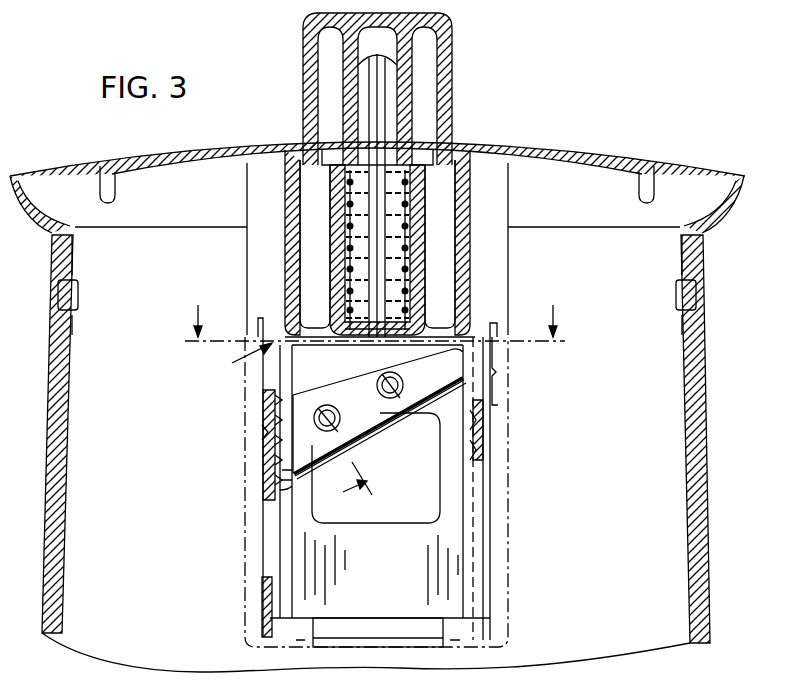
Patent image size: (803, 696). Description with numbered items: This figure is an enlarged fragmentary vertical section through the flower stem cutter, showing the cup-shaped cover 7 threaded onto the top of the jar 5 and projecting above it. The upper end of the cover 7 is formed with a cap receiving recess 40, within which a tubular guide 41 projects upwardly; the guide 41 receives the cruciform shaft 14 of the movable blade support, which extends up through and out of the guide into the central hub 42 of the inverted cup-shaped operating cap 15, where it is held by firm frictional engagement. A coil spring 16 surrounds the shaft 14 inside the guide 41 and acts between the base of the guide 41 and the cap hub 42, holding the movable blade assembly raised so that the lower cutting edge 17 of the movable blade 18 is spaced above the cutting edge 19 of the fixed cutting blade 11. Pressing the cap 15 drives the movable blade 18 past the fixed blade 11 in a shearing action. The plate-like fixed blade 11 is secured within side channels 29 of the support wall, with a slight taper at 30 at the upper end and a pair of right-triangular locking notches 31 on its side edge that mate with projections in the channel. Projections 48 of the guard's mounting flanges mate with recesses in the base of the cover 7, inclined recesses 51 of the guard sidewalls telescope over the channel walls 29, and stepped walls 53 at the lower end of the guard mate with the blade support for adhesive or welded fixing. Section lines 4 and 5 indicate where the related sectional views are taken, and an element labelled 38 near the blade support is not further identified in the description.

The cover 7 is at (702, 240).
The operating cap 15 is at (453, 58).
The shaft 14 is at (386, 110).
The central hub 42 is at (414, 118).
The spring 16 is at (408, 208).
The cap receiving recess 40 is at (452, 262).
The tubular guide 41 is at (412, 300).
The projections 48 is at (492, 322).
The section line 4- 4 is at (375, 312).
The jar 5 is at (290, 423).
The fixed cutting blade 11 is at (458, 545).
The lower cutting edge 17 is at (355, 445).
The movable blade 18 is at (386, 420).
The cutting edge 19 is at (386, 522).
The side channels 29 is at (265, 530).
The tapered portion 30 is at (268, 438).
The locking notches 31 is at (270, 425).
The stop 38 is at (292, 460).
The recesses 51 is at (502, 400).
The stepped walls 53 is at (302, 645).